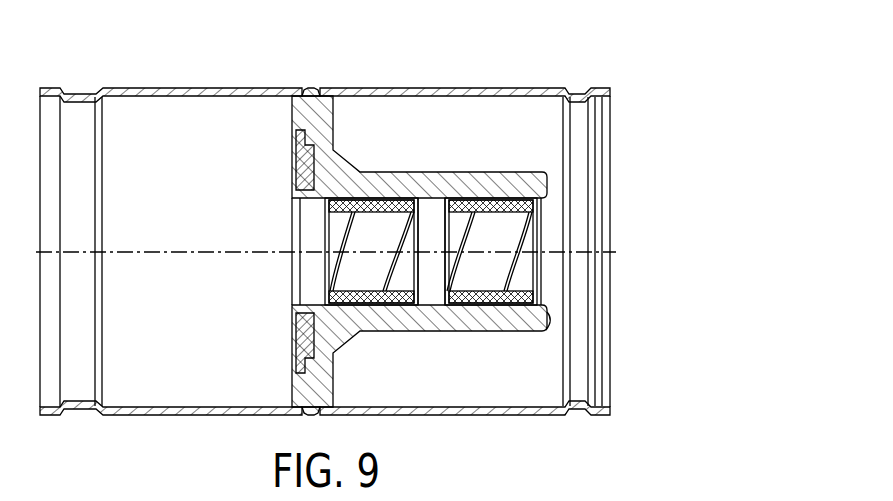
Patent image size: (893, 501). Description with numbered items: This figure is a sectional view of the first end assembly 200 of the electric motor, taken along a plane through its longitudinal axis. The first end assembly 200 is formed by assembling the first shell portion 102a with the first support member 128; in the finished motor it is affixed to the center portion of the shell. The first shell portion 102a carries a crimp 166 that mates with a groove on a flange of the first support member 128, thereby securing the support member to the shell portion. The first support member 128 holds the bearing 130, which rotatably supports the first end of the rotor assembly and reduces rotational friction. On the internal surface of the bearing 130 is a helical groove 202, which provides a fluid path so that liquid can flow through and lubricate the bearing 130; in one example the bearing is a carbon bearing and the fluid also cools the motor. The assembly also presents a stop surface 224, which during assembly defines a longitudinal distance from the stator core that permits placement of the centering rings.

The first end assembly 200 is at (326, 208).
The first shell portion 102a is at (193, 87).
The crimp 166 is at (312, 90).
The first support member 128 is at (318, 120).
The bearing 130 is at (488, 203).
The helical groove 202 is at (455, 292).
The stop surface 224 is at (544, 326).